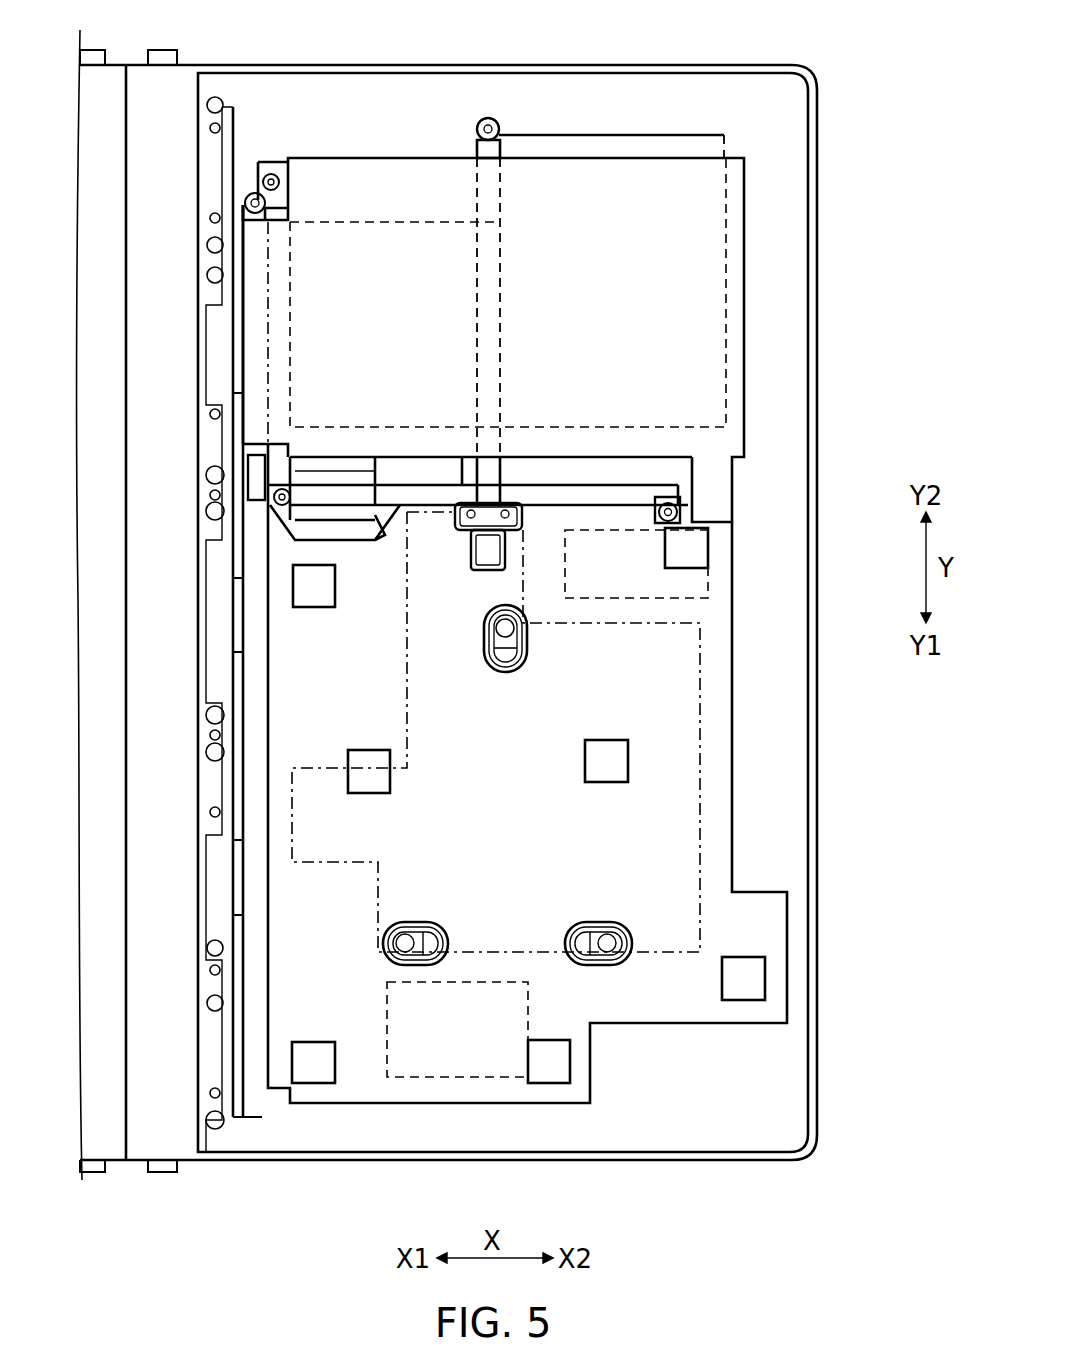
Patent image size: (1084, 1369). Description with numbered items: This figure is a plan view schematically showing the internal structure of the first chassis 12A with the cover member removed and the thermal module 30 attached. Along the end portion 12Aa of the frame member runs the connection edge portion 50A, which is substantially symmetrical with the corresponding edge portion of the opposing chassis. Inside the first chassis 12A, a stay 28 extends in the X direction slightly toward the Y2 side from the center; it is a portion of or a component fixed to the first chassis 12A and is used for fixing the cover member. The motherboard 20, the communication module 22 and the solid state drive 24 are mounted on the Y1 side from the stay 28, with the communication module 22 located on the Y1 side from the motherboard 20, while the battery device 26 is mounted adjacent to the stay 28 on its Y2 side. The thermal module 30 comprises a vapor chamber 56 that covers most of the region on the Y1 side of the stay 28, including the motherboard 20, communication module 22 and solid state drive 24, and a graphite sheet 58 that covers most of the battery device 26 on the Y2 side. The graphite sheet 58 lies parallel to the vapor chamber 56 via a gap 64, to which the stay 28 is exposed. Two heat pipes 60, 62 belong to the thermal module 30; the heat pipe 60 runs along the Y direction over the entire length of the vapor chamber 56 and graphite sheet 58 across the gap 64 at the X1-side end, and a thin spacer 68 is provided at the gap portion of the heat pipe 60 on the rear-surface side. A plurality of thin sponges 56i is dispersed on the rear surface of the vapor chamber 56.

The first chassis 12A is at (828, 1168).
The end portion 12Aa is at (110, 1075).
The connection edge portion 50A is at (172, 137).
The graphite sheet 58 is at (615, 300).
The battery device 26 is at (665, 203).
The thermal module 30 is at (582, 340).
The heat pipe 62 is at (487, 292).
The heat pipe 60 is at (258, 318).
The gap 64 is at (545, 470).
The spacer 68 is at (257, 475).
The motherboard 20 is at (635, 707).
The stay 28 is at (690, 512).
The solid state drive 24 is at (640, 563).
The vapor chamber 56 is at (603, 617).
The thin sponges 56i is at (615, 760).
The communication module 22 is at (457, 1062).